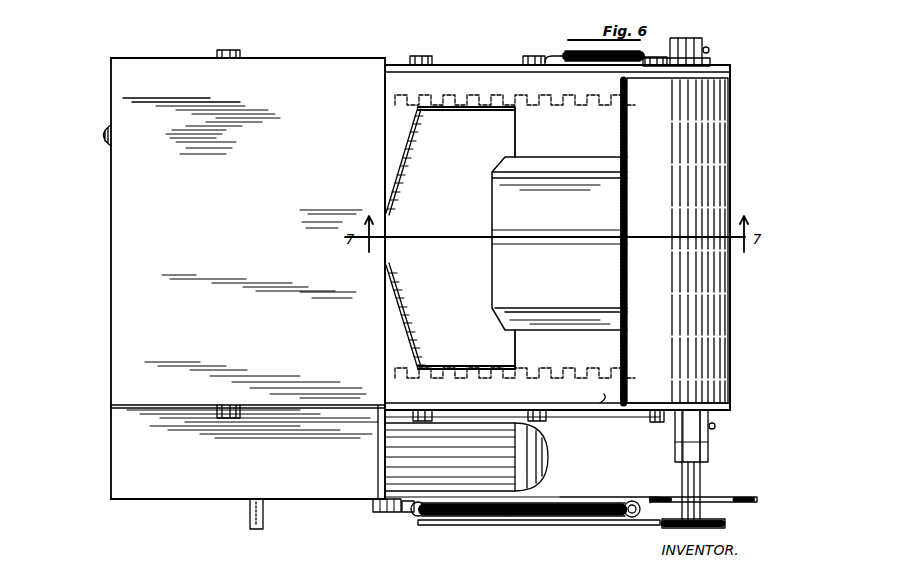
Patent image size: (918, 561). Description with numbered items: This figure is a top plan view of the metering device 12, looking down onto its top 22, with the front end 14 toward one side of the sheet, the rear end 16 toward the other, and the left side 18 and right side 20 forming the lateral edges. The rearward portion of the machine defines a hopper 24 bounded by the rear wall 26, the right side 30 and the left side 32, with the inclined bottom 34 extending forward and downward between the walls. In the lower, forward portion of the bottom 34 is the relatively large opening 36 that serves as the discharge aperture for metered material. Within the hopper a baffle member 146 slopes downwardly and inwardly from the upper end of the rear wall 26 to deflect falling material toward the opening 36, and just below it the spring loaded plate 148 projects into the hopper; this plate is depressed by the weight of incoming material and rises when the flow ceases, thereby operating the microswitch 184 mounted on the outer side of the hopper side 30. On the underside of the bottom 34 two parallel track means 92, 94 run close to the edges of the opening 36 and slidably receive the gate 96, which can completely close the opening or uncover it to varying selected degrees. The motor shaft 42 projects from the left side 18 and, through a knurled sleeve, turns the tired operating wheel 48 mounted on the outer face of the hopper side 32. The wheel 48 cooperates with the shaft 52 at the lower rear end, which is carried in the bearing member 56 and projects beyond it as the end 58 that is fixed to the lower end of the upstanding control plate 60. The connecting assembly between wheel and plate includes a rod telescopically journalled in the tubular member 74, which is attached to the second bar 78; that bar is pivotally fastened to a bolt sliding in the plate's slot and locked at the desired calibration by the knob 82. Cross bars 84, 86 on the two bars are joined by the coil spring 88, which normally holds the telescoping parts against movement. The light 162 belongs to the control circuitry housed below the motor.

The metering device 12 is at (444, 40).
The front end 14 is at (100, 254).
The rear end 16 is at (744, 176).
The left side 18 is at (322, 514).
The right side 20 is at (290, 48).
The top 22 is at (178, 74).
The hopper 24 is at (474, 78).
The rear wall 26 is at (731, 110).
The right side 30 is at (503, 76).
The left side 32 is at (606, 406).
The bottom 34 is at (578, 142).
The opening 36 is at (412, 326).
The motor shaft 42 is at (250, 522).
The tired operating wheel 48 is at (548, 470).
The shaft 52 is at (712, 458).
The bearing member 56 is at (716, 428).
The projecting shaft end 58 is at (720, 480).
The control plate 60 is at (750, 498).
The tubular member 74 is at (463, 526).
The second bar 78 is at (598, 500).
The knob 82 is at (728, 523).
The cross bar 84 is at (414, 517).
The cross bar 86 is at (636, 501).
The coil spring 88 is at (546, 505).
The track means 92 is at (463, 370).
The track means 94 is at (498, 112).
The gate 96 is at (455, 192).
The baffle member 146 is at (708, 326).
The spring loaded plate 148 is at (500, 268).
The light 162 is at (104, 134).
The microswitch 184 is at (703, 62).